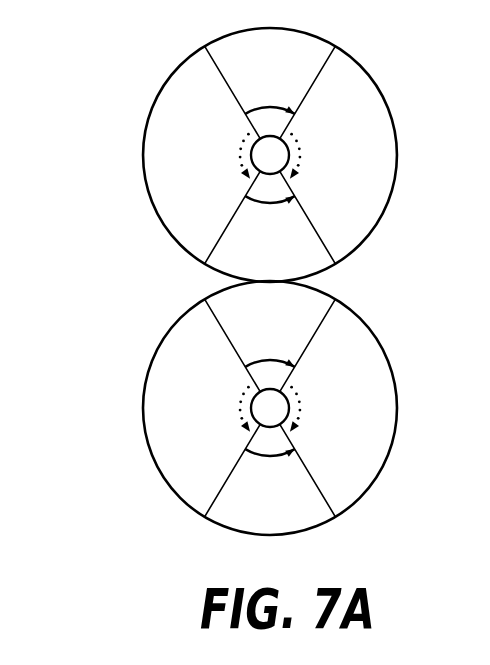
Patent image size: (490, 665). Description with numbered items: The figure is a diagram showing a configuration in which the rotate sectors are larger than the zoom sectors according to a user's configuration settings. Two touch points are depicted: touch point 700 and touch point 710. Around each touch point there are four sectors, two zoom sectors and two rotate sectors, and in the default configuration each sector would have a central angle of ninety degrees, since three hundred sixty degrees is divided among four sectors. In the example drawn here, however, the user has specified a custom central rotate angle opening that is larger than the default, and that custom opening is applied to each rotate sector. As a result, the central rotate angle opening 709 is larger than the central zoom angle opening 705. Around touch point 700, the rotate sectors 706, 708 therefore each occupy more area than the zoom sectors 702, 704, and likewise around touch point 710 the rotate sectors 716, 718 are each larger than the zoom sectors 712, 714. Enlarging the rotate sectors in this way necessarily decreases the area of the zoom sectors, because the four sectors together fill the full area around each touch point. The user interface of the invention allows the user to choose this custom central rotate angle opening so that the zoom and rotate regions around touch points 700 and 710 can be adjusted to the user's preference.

The touch point 700 is at (266, 151).
The zoom sector 702 is at (300, 31).
The zoom sector 704 is at (218, 272).
The central zoom angle opening 705 is at (252, 110).
The rotate sector 706 is at (143, 140).
The rotate sector 708 is at (397, 143).
The central rotate angle opening 709 is at (242, 140).
The touch point 710 is at (268, 410).
The zoom sector 712 is at (317, 290).
The zoom sector 714 is at (232, 531).
The rotate sector 716 is at (160, 343).
The rotate sector 718 is at (397, 401).